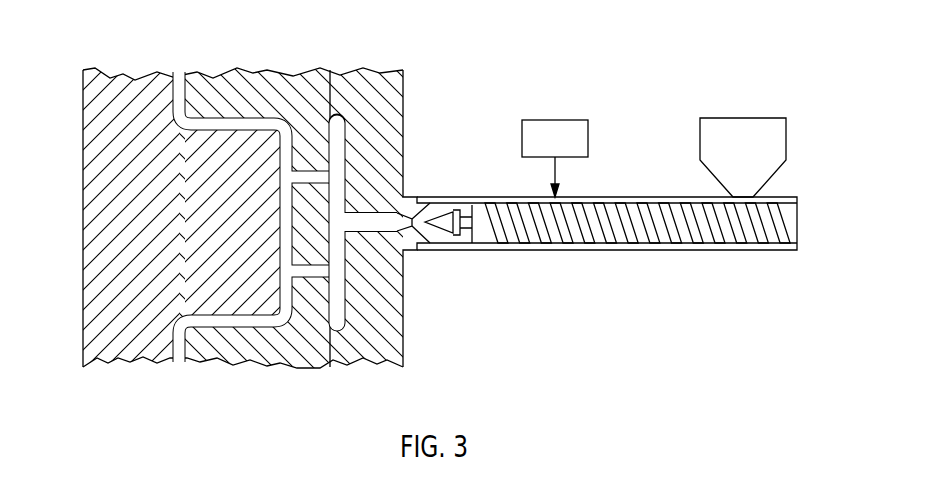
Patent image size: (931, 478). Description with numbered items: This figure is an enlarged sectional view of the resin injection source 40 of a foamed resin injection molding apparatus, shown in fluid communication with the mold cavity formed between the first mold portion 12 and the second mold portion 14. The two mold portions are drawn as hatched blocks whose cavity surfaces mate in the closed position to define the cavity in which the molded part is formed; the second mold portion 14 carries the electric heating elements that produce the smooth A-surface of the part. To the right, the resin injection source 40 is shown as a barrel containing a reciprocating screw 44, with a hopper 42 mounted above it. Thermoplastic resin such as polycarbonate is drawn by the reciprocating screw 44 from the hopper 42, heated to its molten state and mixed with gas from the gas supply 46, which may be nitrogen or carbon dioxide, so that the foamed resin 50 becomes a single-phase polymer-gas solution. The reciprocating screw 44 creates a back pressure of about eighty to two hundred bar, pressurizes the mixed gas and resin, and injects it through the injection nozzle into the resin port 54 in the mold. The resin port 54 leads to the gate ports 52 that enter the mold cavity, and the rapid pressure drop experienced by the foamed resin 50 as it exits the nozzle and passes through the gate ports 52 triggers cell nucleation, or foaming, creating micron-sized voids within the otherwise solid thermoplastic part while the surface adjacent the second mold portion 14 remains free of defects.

The first mold portion 12 is at (272, 81).
The second mold portion 14 is at (137, 91).
The resin injection source 40 is at (622, 187).
The hopper 42 is at (743, 128).
The reciprocating screw 44 is at (774, 244).
The gas supply 46 is at (567, 121).
The foamed resin 50 is at (558, 243).
The gate ports 52 is at (290, 268).
The resin port 54 is at (373, 228).